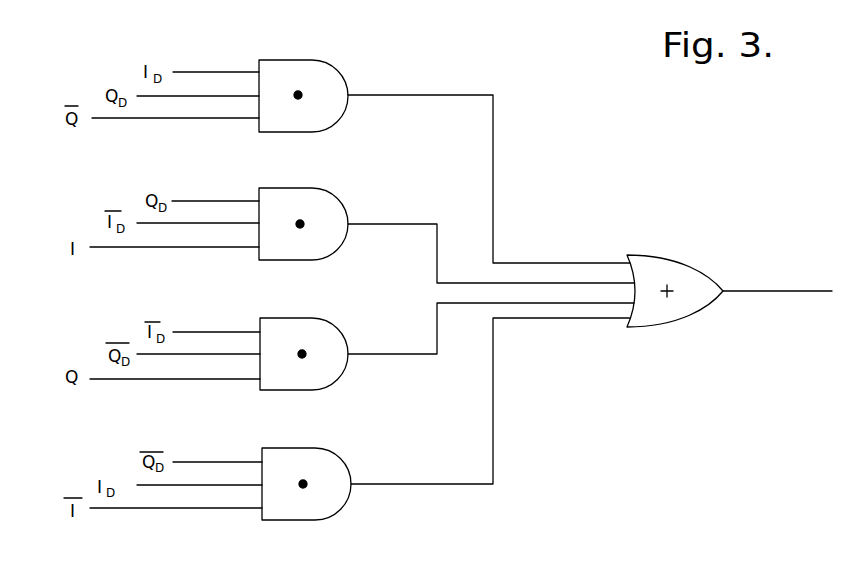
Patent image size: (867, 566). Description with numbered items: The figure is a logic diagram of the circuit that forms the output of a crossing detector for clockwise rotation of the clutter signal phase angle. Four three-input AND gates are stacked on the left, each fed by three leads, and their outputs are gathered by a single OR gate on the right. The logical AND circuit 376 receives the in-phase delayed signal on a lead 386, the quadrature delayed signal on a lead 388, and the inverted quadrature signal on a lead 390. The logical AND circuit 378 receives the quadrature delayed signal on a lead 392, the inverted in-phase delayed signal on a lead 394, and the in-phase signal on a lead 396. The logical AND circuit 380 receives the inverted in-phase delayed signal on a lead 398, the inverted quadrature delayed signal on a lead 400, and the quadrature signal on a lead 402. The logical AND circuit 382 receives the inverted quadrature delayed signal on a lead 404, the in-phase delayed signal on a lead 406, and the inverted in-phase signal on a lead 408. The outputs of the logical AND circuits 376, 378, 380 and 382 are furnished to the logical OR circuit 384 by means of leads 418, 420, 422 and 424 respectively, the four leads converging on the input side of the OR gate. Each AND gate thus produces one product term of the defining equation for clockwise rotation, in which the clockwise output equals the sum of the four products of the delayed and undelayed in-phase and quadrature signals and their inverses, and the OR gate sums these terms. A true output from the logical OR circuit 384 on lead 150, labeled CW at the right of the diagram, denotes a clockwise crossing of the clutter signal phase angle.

The logical AND circuit 376 is at (325, 73).
The logical AND circuit 378 is at (328, 212).
The logical AND circuit 380 is at (330, 341).
The logical AND circuit 382 is at (345, 464).
The logical OR circuit 384 is at (682, 267).
The lead 386 is at (197, 72).
The lead 388 is at (228, 98).
The lead 390 is at (186, 119).
The lead 392 is at (230, 200).
The lead 394 is at (232, 225).
The lead 396 is at (175, 248).
The lead 398 is at (230, 330).
The lead 400 is at (237, 357).
The lead 402 is at (187, 380).
The lead 404 is at (230, 462).
The lead 406 is at (240, 487).
The lead 408 is at (187, 509).
The lead 418 is at (495, 182).
The lead 420 is at (410, 225).
The lead 422 is at (395, 357).
The lead 424 is at (462, 485).
The lead 150 is at (795, 292).